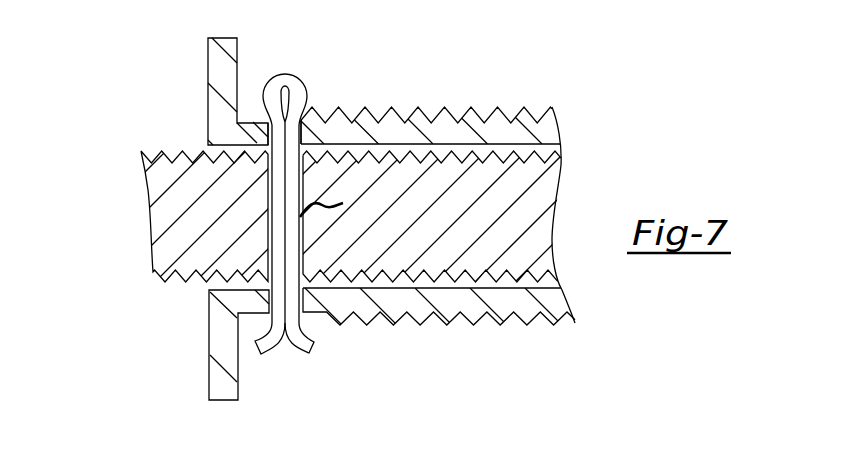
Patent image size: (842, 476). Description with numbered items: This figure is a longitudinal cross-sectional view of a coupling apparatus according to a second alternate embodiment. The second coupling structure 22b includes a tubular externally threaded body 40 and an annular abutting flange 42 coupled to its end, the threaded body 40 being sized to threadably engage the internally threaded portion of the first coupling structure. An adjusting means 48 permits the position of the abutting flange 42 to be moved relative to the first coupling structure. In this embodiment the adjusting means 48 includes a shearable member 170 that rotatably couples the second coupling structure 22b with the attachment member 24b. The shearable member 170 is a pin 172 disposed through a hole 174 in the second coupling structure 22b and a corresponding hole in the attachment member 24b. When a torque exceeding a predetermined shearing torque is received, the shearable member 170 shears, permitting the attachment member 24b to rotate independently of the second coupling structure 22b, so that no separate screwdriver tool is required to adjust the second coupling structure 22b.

The abutting flange 42 is at (212, 68).
The adjusting means 48 is at (351, 222).
The hole 174 is at (300, 132).
The second coupling structure 22b is at (483, 133).
The attachment member 24b is at (500, 198).
The externally threaded body 40 is at (499, 308).
The shearable member 170 is at (302, 345).
The pin 172 is at (266, 344).